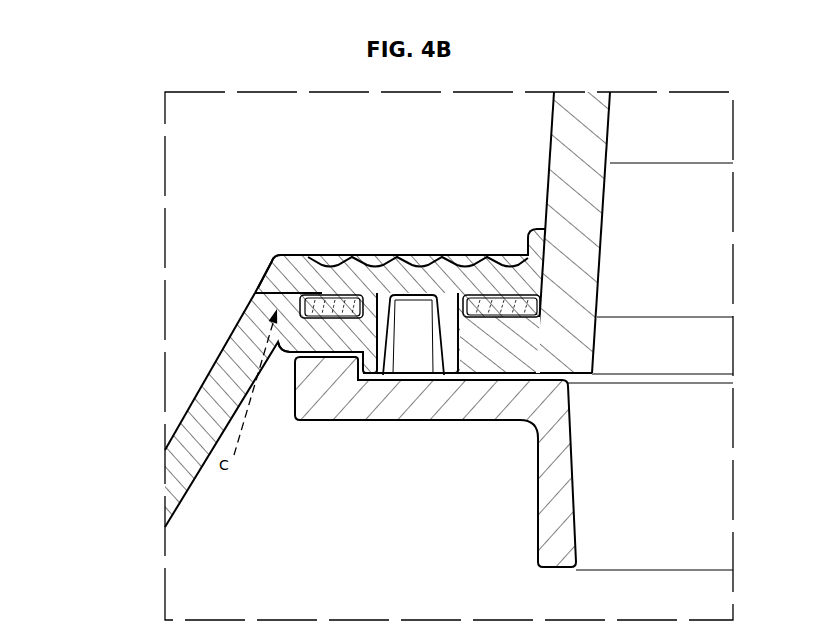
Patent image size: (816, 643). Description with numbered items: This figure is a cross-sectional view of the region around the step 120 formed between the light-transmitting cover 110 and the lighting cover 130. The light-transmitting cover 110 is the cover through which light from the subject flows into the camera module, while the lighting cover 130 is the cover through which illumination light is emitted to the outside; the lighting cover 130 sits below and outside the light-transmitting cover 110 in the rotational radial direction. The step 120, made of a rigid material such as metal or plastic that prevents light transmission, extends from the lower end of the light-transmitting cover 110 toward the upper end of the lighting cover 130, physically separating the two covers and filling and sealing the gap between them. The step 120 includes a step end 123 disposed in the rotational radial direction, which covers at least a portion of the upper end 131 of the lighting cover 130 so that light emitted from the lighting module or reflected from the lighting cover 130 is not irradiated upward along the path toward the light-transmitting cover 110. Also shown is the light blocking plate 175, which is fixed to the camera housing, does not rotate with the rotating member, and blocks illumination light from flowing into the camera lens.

The light-transmitting cover 110 is at (560, 147).
The step 120 is at (390, 267).
The step end 123 is at (277, 272).
The lighting cover 130 is at (203, 412).
The upper end 131 is at (242, 318).
The light blocking plate 175 is at (557, 404).